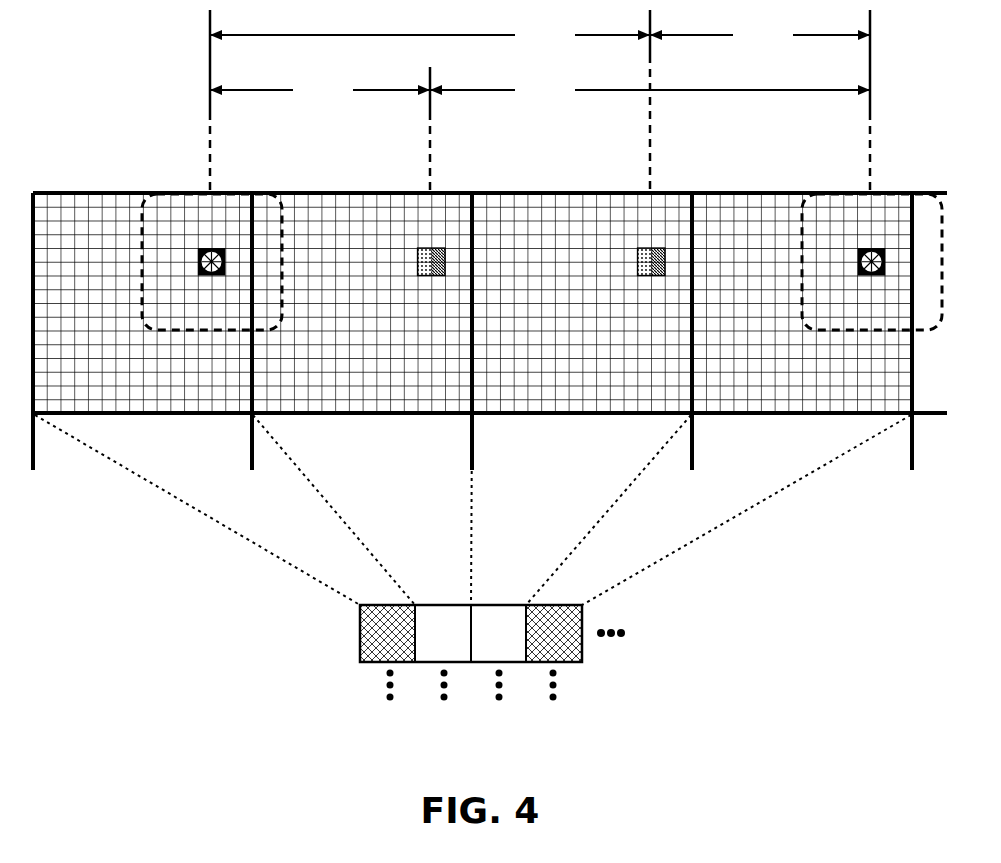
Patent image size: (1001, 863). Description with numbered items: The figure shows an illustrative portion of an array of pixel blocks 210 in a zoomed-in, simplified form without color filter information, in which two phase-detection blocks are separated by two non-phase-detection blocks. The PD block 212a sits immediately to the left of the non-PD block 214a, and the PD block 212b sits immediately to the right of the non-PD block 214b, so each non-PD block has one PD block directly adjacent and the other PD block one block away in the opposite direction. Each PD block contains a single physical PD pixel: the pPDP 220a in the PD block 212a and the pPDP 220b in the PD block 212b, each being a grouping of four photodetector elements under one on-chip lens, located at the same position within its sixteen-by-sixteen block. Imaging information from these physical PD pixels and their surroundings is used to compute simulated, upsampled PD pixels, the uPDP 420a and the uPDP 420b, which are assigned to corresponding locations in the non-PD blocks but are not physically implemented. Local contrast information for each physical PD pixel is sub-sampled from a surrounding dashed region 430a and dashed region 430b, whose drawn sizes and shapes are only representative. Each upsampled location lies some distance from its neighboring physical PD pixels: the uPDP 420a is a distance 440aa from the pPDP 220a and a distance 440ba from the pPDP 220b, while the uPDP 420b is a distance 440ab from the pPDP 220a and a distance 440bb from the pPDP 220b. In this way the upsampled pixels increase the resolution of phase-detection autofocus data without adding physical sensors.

The pixel block 210 is at (448, 653).
The PD block 212a is at (387, 633).
The PD block 212b is at (554, 633).
The non-PD block 214a is at (443, 633).
The non-PD block 214b is at (498, 633).
The pPDP 220a is at (212, 248).
The pPDP 220b is at (872, 248).
The uPDP 420a is at (437, 247).
The uPDP 420b is at (657, 247).
The dashed region 430a is at (140, 205).
The dashed region 430b is at (796, 205).
The distance 440aa is at (320, 89).
The distance 440ab is at (430, 34).
The distance 440ba is at (650, 89).
The distance 440bb is at (760, 34).